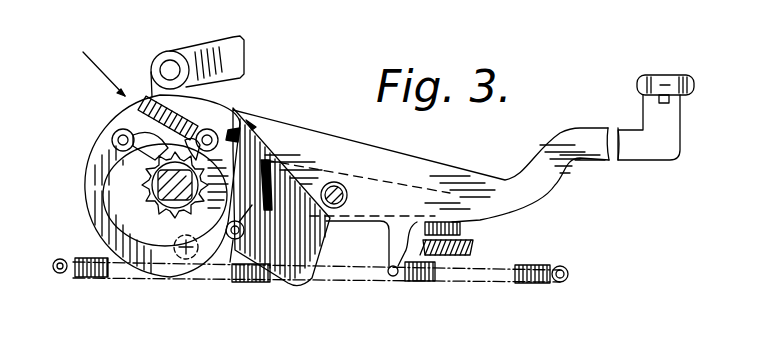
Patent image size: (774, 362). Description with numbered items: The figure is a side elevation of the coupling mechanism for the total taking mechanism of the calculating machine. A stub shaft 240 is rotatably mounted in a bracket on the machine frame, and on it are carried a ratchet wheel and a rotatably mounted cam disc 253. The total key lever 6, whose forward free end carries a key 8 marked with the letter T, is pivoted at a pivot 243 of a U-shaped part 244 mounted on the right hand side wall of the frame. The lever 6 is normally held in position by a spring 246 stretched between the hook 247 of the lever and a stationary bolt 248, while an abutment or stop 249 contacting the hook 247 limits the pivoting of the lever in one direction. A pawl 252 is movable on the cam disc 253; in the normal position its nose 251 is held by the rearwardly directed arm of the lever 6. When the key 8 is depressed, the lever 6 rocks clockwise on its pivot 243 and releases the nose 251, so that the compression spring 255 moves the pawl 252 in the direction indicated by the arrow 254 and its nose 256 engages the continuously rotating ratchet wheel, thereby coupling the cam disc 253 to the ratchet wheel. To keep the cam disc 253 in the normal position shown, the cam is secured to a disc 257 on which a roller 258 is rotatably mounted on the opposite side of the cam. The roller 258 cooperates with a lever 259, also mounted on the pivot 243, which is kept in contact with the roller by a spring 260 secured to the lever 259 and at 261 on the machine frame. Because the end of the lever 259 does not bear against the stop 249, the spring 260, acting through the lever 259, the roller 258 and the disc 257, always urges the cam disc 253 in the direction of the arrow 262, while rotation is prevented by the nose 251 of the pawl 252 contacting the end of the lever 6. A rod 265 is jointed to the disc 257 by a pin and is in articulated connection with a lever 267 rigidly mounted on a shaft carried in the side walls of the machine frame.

The total key lever 6 is at (481, 180).
The key 8 is at (637, 83).
The stub shaft 240 is at (185, 200).
The pivot 243 is at (334, 182).
The U-shaped part 244 is at (150, 204).
The spring 246 is at (531, 283).
The hook 247 is at (392, 276).
The stationary bolt 248 is at (560, 282).
The abutment or stop 249 is at (448, 256).
The nose of the pawl 251 is at (230, 129).
The pawl 252 is at (113, 117).
The cam disc 253 is at (232, 110).
The arrow 254 is at (100, 71).
The compression spring 255 is at (192, 130).
The nose of the pawl 256 is at (127, 168).
The disc 257 is at (92, 158).
The roller 258 is at (240, 282).
The lever 259 is at (305, 238).
The spring 260 is at (92, 277).
The spring attachment point 261 is at (57, 271).
The arrow 262 is at (256, 124).
The rod 265 is at (222, 99).
The lever 267 is at (237, 54).